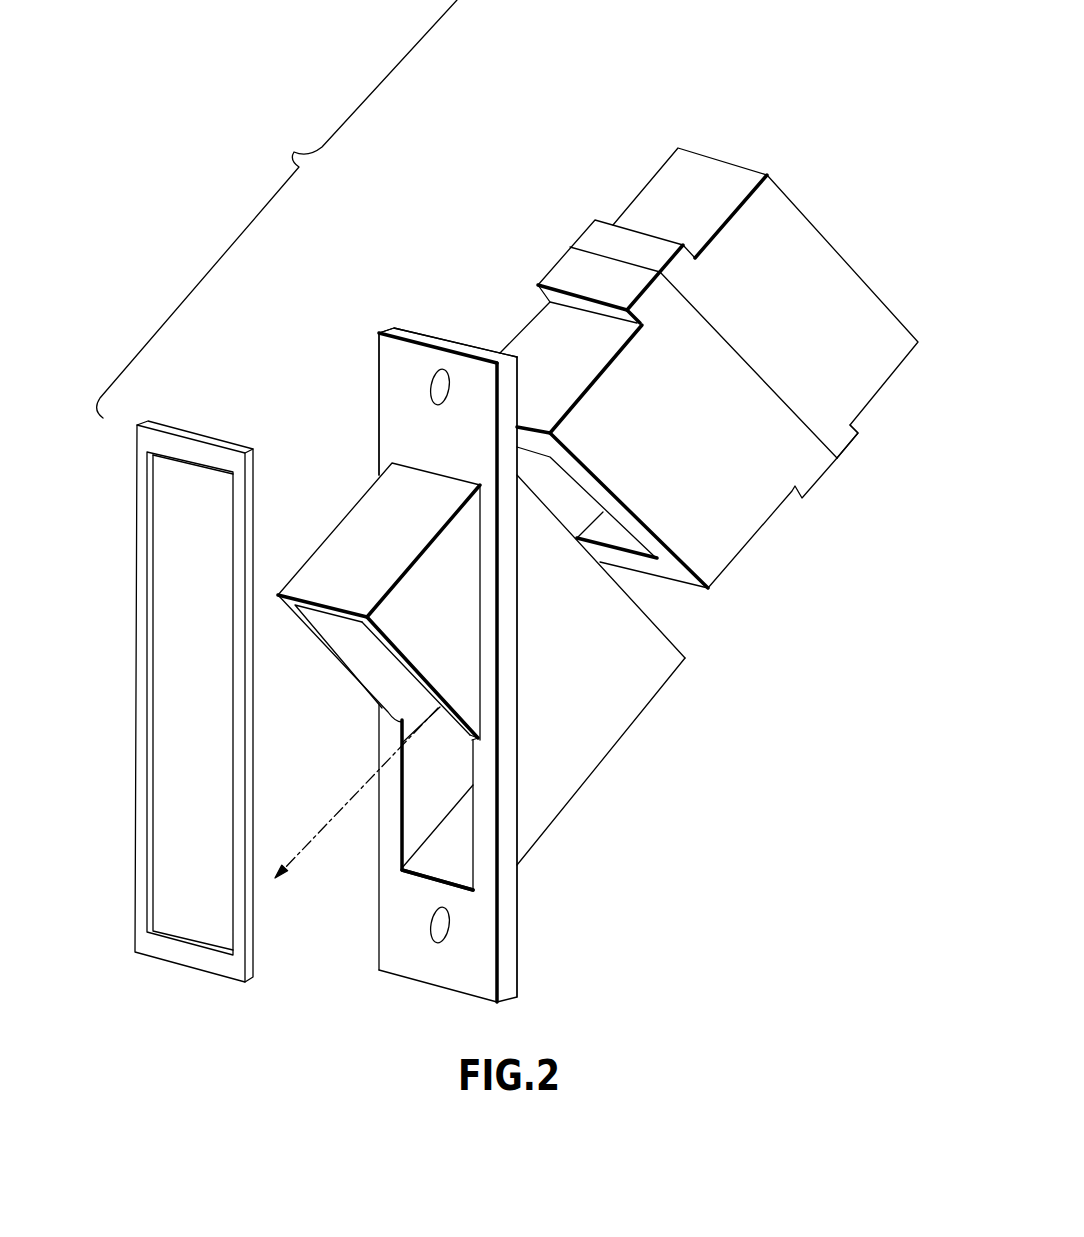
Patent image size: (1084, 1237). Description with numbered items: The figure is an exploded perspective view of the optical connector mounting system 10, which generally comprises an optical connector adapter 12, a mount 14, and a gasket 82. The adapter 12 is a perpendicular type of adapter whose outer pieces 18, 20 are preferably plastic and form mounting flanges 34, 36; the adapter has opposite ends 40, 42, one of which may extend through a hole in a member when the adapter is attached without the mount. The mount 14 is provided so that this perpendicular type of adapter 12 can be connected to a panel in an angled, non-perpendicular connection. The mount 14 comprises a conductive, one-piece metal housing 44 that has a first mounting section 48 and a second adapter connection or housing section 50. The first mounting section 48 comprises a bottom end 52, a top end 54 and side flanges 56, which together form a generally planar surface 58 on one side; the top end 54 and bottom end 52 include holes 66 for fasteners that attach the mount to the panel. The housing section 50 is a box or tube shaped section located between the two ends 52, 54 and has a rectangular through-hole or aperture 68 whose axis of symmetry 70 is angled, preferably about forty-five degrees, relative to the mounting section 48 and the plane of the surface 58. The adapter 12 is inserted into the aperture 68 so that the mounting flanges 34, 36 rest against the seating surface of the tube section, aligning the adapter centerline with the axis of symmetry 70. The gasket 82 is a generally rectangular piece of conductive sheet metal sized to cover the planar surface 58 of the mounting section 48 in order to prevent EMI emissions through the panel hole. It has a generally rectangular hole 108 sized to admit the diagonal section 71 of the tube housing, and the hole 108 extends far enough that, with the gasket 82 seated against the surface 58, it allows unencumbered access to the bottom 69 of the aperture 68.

The mounting system 10 is at (750, 790).
The optical connector adapter 12 is at (883, 340).
The mount 14 is at (647, 683).
The outer piece 18 is at (742, 528).
The outer piece 20 is at (828, 258).
The mounting flange 34 is at (560, 277).
The mounting flange 36 is at (810, 470).
The end 40 is at (792, 197).
The end 42 is at (685, 575).
The housing 44 is at (606, 645).
The first mounting section 48 is at (380, 443).
The housing section 50 is at (347, 560).
The bottom end 52 is at (517, 950).
The top end 54 is at (387, 373).
The side flanges 56 is at (503, 817).
The planar surface 58 is at (387, 843).
The holes 66 is at (435, 382).
The aperture 68 is at (368, 658).
The bottom of the aperture 69 is at (420, 877).
The axis of symmetry 70 is at (342, 810).
The diagonal section 71 is at (459, 597).
The gasket 82 is at (212, 972).
The hole 108 is at (170, 763).